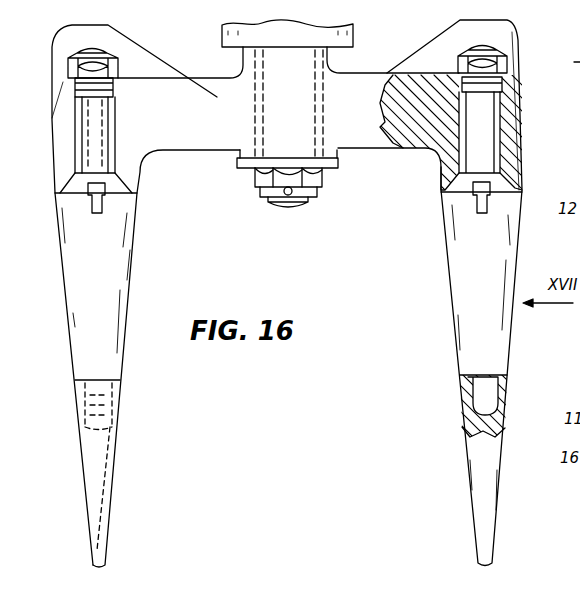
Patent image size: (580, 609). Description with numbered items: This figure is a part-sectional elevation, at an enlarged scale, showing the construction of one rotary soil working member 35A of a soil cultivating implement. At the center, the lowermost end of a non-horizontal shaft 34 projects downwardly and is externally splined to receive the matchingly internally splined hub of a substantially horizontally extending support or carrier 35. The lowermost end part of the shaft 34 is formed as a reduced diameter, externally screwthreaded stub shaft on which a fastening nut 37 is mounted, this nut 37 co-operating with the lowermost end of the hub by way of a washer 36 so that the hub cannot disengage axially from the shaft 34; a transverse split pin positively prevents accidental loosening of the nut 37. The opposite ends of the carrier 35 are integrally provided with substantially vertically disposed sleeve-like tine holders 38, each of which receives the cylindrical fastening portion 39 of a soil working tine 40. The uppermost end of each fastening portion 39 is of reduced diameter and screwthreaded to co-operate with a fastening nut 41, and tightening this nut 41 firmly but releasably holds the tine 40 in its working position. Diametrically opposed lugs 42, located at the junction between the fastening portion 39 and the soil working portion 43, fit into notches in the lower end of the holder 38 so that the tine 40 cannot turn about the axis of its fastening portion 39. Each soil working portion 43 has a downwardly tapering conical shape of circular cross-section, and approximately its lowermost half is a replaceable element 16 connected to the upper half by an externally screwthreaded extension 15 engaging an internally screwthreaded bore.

The externally screwthreaded extension 15 is at (113, 402).
The replaceable element 16 is at (98, 483).
The shaft 34 is at (285, 203).
The support or carrier 35 is at (387, 140).
The rotary soil working member 35A is at (316, 271).
The washer 36 is at (247, 165).
The fastening nut 37 is at (267, 178).
The sleeve-like tine holder 38 is at (517, 134).
The cylindrical fastening portion 39 is at (96, 127).
The soil working tine 40 is at (491, 268).
The fastening nut 41 is at (120, 62).
The lug 42 is at (102, 209).
The soil working portion 43 is at (128, 315).